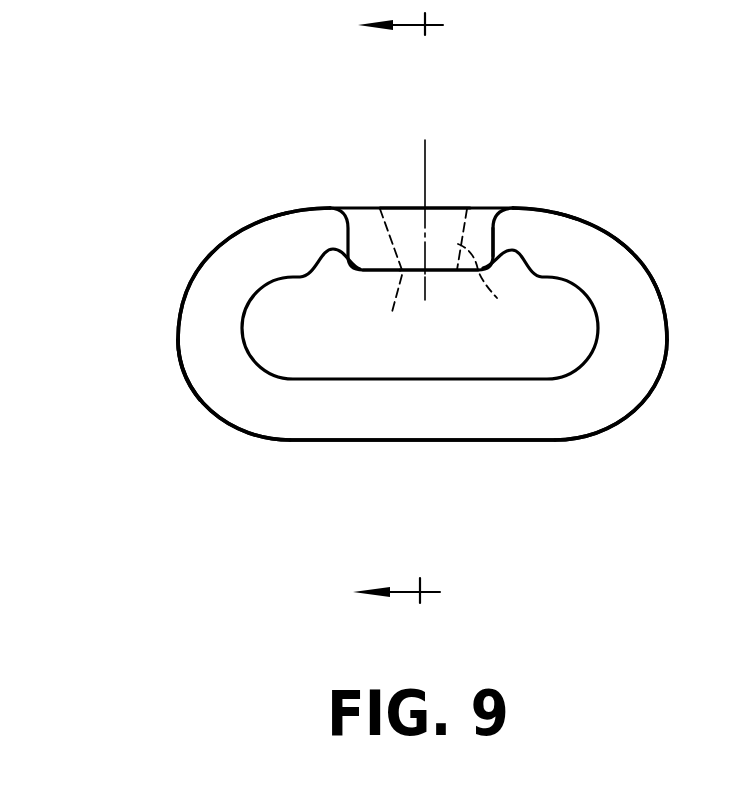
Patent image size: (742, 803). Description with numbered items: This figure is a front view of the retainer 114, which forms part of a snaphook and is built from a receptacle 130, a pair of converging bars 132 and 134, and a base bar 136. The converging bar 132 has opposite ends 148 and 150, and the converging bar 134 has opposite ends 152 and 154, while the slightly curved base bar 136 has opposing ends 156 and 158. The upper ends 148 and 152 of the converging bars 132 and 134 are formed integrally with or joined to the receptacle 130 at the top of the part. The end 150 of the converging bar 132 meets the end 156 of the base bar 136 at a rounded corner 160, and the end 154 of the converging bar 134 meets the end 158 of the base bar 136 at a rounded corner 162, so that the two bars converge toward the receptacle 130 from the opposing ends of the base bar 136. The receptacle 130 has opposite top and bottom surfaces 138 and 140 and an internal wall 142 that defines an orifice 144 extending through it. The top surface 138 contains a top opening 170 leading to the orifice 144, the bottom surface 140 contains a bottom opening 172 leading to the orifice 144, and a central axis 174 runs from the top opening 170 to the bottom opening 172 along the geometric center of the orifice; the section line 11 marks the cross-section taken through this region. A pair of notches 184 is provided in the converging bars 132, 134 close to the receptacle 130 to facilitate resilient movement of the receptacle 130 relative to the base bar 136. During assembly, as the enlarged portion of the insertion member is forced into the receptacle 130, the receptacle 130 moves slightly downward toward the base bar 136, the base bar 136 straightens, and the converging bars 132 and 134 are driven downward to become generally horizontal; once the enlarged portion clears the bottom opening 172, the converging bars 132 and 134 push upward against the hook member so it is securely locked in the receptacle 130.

The section line 11- 11 is at (407, 319).
The retainer 114 is at (365, 253).
The receptacle 130 is at (484, 223).
The converging bar 132 is at (238, 245).
The converging bar 134 is at (600, 238).
The base bar 136 is at (408, 418).
The top surface 138 is at (352, 198).
The bottom surface 140 is at (364, 283).
The internal wall 142 is at (491, 298).
The orifice 144 is at (404, 319).
The end of converging bar 148 is at (305, 178).
The end of converging bar 150 is at (203, 272).
The end of converging bar 152 is at (523, 223).
The end of converging bar 154 is at (647, 289).
The end of base bar 156 is at (270, 419).
The end of base bar 158 is at (578, 425).
The rounded corner 160 is at (193, 353).
The rounded corner 162 is at (672, 334).
The top opening 170 is at (440, 208).
The bottom opening 172 is at (442, 271).
The central axis 174 is at (428, 158).
The notches 184 is at (338, 266).